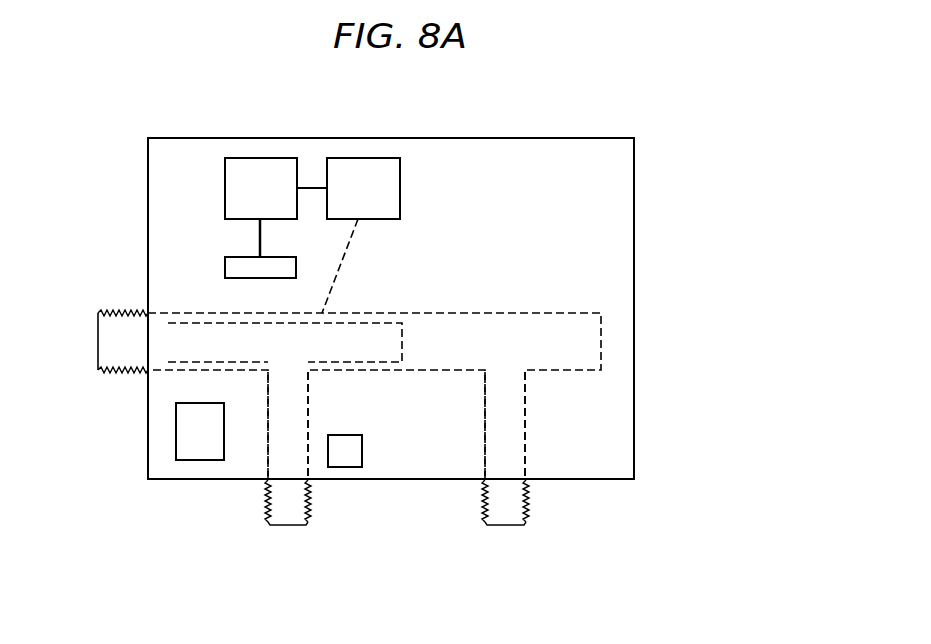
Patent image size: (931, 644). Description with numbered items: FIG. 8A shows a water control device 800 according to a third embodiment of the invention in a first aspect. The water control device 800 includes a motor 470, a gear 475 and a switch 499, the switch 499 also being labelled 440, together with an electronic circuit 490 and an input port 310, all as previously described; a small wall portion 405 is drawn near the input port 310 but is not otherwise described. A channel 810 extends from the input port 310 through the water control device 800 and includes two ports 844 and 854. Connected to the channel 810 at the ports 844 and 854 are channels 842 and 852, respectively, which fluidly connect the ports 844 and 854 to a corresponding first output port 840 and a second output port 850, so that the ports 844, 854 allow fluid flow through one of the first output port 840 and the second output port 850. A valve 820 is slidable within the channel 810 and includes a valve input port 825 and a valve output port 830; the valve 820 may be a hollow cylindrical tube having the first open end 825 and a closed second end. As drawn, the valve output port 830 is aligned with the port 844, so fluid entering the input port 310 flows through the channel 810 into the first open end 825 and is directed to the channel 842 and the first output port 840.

The water control device 800 is at (515, 97).
The motor 470 is at (257, 158).
The gear 475 is at (360, 158).
The switch 499 is at (225, 267).
The input port 310 is at (98, 342).
The inlet port wall 405 is at (113, 374).
The channel 810 is at (573, 315).
The valve 820 is at (413, 335).
The valve input port 825 is at (174, 346).
The valve output port 830 is at (290, 355).
The first output port 840 is at (311, 505).
The channel 842 is at (295, 450).
The port 844 is at (290, 380).
The second output port 850 is at (528, 517).
The channel 852 is at (508, 427).
The port 854 is at (506, 370).
The switch 440 is at (363, 452).
The electronic circuit 490 is at (188, 460).